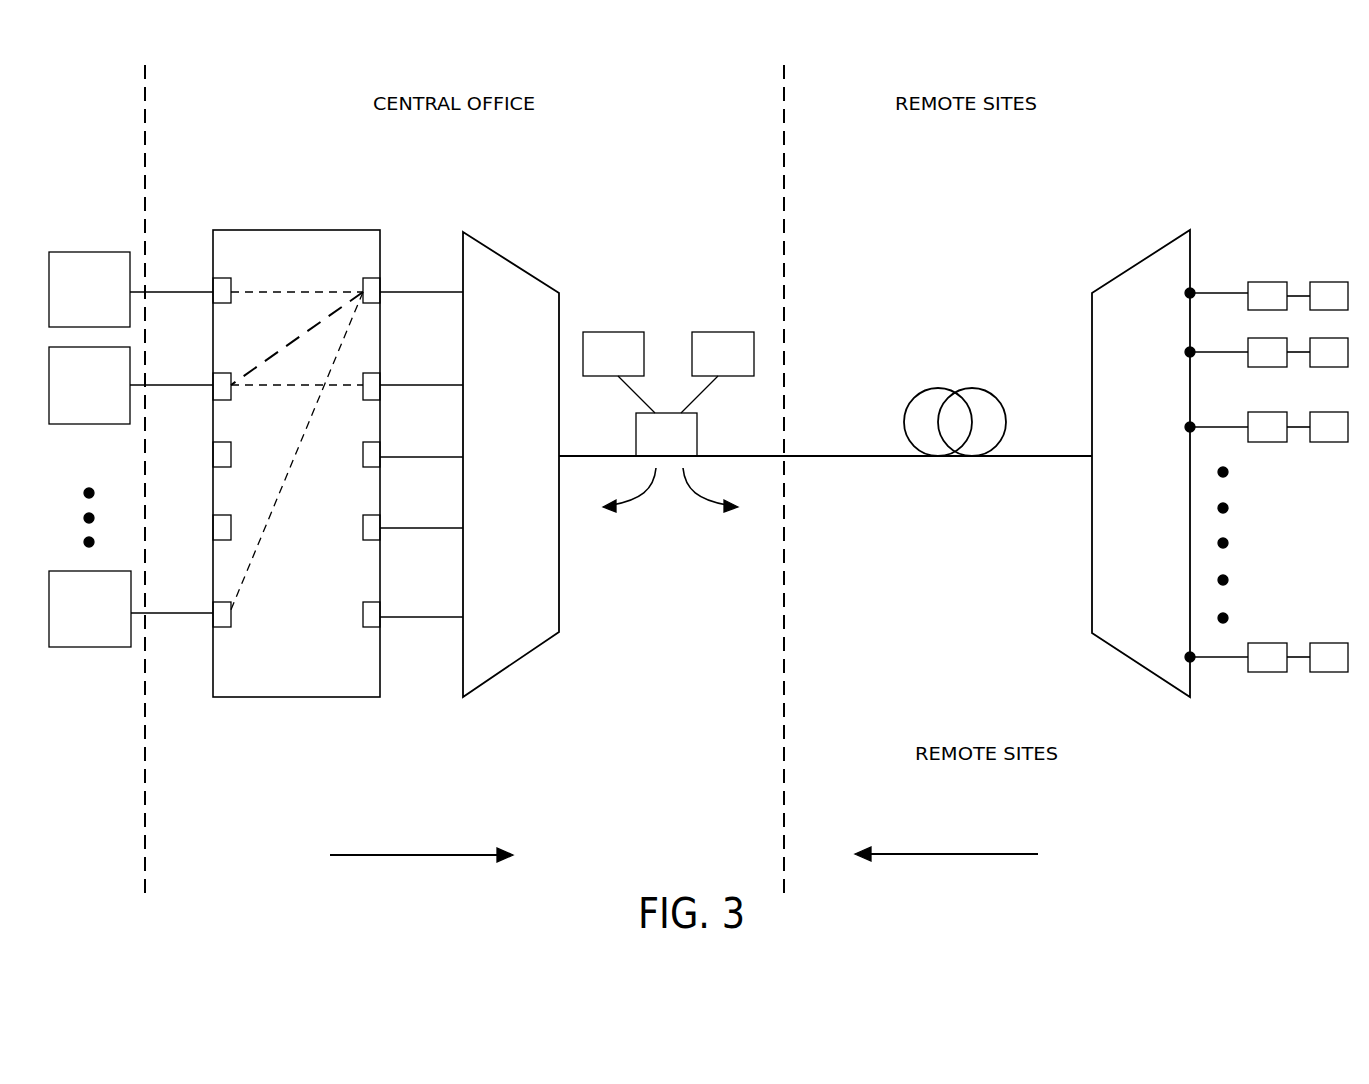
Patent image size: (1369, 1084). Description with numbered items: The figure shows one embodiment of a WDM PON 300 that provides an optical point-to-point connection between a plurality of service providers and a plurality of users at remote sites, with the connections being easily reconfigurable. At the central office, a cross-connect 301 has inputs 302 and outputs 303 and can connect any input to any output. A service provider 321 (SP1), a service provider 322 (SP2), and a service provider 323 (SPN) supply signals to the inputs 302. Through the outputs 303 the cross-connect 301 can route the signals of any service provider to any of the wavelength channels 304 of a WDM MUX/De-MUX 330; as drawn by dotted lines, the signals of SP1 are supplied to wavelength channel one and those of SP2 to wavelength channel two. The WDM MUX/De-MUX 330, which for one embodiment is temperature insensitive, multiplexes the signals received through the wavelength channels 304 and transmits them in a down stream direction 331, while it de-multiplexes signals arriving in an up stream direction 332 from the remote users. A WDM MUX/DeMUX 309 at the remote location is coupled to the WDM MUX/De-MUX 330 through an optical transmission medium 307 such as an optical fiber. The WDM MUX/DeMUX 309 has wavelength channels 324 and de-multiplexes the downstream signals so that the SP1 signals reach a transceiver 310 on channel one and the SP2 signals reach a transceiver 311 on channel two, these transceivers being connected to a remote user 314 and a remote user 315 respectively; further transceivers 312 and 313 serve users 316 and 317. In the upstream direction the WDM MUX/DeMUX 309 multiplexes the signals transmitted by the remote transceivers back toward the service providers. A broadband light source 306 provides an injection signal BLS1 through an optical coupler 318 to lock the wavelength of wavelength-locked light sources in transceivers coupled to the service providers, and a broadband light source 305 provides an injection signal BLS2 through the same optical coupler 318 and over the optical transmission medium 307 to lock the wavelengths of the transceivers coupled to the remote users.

The WDM PON 300 is at (471, 139).
The cross-connect 301 is at (290, 674).
The inputs 302 is at (213, 299).
The outputs 303 is at (381, 281).
The wavelength channels 304 is at (430, 291).
The broadband light source 305 is at (618, 331).
The broadband light source 306 is at (728, 331).
The optical transmission medium 307 is at (953, 458).
The WDM MUX/DeMUX 309 is at (1164, 632).
The transceiver 310 is at (1284, 307).
The transceiver 311 is at (1284, 364).
The transceiver 312 is at (1284, 438).
The transceiver 313 is at (1284, 669).
The remote user 314 is at (1346, 307).
The remote user 315 is at (1346, 364).
The user 316 is at (1346, 438).
The user 317 is at (1346, 669).
The optical coupler 318 is at (684, 447).
The service provider 321 is at (84, 250).
The service provider 322 is at (66, 424).
The service provider 323 is at (65, 647).
The wavelength channels 324 is at (1213, 351).
The WDM MUX/De-MUX 330 is at (525, 632).
The down stream direction 331 is at (421, 857).
The up stream direction 332 is at (946, 857).